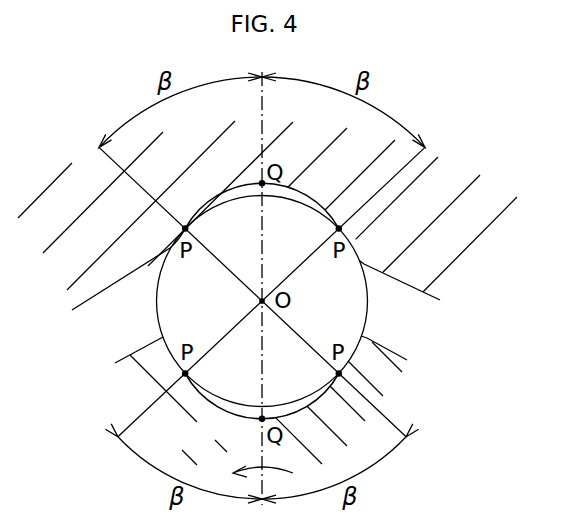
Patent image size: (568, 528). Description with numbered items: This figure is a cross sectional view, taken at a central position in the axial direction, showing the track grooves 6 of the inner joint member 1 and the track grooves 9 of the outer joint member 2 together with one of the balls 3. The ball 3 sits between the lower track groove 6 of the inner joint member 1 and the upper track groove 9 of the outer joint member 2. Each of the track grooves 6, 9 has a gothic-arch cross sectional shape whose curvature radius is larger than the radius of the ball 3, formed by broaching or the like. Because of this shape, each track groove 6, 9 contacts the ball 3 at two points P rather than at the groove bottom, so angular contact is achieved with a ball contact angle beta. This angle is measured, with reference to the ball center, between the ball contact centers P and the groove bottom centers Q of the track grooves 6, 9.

The inner joint member 1 is at (338, 410).
The outer joint member 2 is at (455, 236).
The ball 3 is at (348, 313).
The track groove 6 is at (244, 405).
The track groove 9 is at (249, 191).